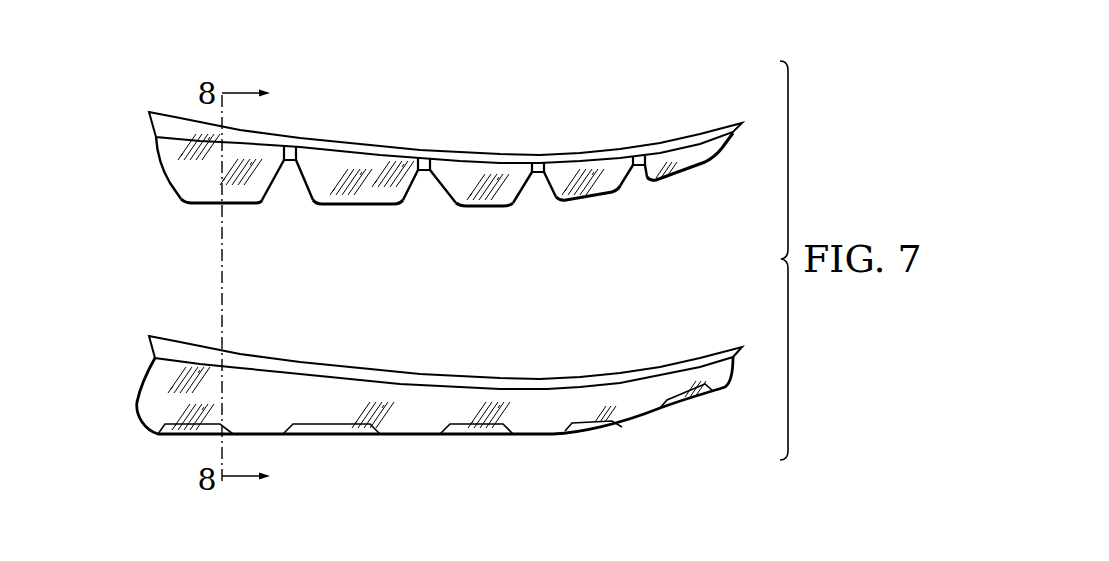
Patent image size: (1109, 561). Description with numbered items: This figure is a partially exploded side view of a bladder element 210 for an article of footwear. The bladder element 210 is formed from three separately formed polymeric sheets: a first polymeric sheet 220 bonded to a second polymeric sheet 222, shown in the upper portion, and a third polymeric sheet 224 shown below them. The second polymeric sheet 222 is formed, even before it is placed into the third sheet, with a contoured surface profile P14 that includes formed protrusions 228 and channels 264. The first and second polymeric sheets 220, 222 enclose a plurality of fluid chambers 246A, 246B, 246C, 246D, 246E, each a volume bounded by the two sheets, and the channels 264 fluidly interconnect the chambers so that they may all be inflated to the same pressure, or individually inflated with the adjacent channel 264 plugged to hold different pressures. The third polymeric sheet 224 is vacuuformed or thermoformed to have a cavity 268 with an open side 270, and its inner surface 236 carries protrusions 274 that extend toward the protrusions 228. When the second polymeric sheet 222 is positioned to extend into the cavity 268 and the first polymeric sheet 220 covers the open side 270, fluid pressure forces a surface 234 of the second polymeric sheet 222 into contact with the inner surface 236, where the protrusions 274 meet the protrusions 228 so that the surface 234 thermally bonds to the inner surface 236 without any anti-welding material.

The bladder element 210 is at (131, 221).
The first polymeric sheet 220 is at (567, 150).
The second polymeric sheet 222 is at (165, 160).
The third polymeric sheet 224 is at (134, 400).
The formed protrusions 228 is at (207, 203).
The surface 234 is at (347, 214).
The inner surface 236 is at (326, 408).
The fluid chamber 246A is at (178, 150).
The fluid chamber 246B is at (362, 170).
The fluid chamber 246C is at (477, 177).
The fluid chamber 246D is at (597, 173).
The fluid chamber 246E is at (695, 150).
The channels 264 is at (289, 151).
The cavity 268 is at (418, 403).
The open side 270 is at (307, 358).
The protrusions 274 is at (200, 434).
The contoured surface profile P14 is at (170, 190).